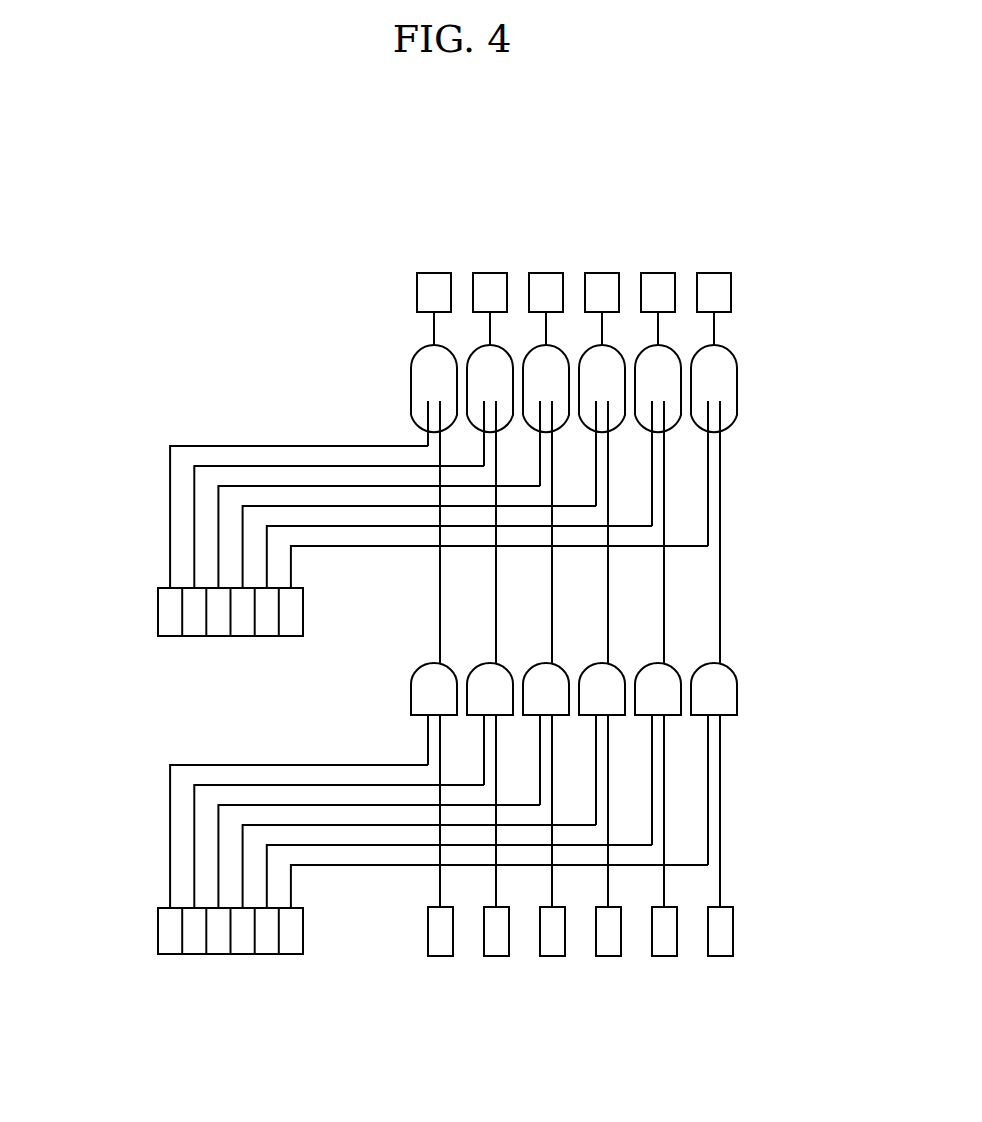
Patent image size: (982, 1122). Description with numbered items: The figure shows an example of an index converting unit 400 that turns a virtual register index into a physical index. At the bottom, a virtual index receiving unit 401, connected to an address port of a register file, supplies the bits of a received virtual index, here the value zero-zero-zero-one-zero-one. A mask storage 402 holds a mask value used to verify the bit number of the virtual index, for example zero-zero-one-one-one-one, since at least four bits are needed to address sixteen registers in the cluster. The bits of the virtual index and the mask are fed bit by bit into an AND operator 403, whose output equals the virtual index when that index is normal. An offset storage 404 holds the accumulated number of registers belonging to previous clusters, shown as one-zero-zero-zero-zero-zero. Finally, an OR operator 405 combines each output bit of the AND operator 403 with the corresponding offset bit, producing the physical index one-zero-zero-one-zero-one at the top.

The index converting unit 400 is at (636, 238).
The virtual index receiving unit 401 is at (756, 932).
The mask storage 402 is at (133, 932).
The AND operator 403 is at (384, 692).
The offset storage 404 is at (133, 612).
The OR operator 405 is at (384, 385).